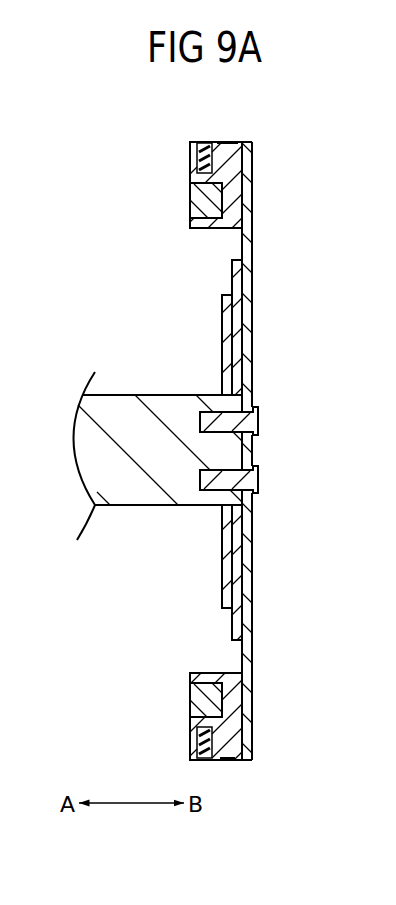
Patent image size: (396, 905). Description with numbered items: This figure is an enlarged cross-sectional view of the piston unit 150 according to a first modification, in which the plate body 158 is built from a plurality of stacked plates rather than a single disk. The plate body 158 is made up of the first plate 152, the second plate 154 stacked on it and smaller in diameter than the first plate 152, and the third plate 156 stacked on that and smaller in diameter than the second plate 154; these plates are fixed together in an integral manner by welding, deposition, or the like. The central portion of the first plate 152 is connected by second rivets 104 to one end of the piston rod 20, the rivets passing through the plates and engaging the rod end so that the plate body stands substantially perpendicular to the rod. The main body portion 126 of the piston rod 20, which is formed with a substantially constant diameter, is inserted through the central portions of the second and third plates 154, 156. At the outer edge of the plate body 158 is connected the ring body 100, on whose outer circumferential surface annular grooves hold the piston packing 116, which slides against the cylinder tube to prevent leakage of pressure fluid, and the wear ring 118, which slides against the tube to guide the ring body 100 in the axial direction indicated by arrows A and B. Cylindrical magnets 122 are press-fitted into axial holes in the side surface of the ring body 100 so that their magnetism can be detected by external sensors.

The piston rod 20 is at (158, 449).
The ring body 100 is at (193, 188).
The second rivets 104 is at (260, 423).
The piston packing 116 is at (205, 141).
The wear ring 118 is at (226, 141).
The magnets 122 is at (204, 205).
The main body portion 126 is at (132, 490).
The piston unit 150 is at (287, 451).
The first plate 152 is at (246, 663).
The second plate 154 is at (237, 628).
The third plate 156 is at (228, 572).
The plate body 158 is at (248, 450).